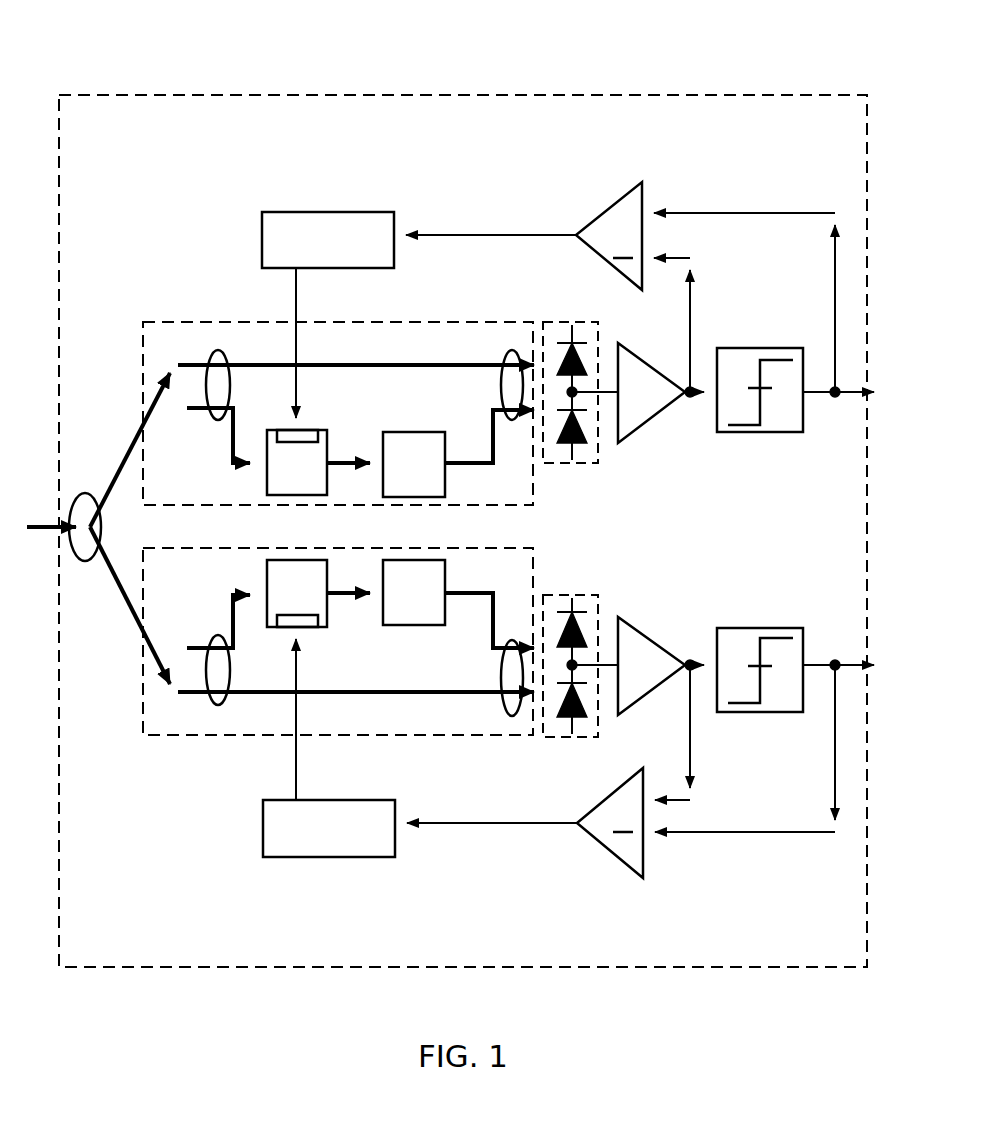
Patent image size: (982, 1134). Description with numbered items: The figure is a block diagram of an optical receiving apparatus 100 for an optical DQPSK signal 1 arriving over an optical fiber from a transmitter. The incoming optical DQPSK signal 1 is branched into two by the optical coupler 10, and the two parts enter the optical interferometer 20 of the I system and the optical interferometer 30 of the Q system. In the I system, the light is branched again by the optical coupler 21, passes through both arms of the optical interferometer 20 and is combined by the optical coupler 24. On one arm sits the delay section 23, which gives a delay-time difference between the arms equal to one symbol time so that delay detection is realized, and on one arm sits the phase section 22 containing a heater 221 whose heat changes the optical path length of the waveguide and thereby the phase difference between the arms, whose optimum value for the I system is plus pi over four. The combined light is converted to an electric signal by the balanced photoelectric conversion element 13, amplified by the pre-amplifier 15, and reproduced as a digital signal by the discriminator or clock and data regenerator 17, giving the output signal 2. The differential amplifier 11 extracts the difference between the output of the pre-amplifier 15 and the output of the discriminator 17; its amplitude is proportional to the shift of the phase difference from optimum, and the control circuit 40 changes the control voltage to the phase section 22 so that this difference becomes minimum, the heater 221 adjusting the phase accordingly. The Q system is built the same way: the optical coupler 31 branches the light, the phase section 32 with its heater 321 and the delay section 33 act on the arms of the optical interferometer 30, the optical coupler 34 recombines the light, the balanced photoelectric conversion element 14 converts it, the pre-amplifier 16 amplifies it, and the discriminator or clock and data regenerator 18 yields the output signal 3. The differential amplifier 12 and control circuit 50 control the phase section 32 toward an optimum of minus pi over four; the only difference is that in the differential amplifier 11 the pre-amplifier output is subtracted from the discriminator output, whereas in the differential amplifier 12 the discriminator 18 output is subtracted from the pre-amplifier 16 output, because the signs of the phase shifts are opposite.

The optical receiving apparatus 100 is at (666, 95).
The optical DQPSK signal 1 is at (34, 530).
The optical coupler (branching unit) 10 is at (72, 505).
The optical interferometer 20 is at (143, 382).
The optical coupler 21 is at (210, 356).
The phase section 22 is at (318, 428).
The heater 221 is at (290, 428).
The delay section 23 is at (416, 432).
The optical coupler 24 is at (512, 350).
The balanced photoelectric conversion element 13 is at (602, 454).
The pre-amplifier 15 is at (656, 408).
The discriminator or clock and data regenerator 17 is at (772, 432).
The output signal 2 is at (880, 386).
The differential amplifier 11 is at (624, 192).
The control circuit 40 is at (334, 212).
The optical interferometer 30 is at (143, 700).
The optical coupler 31 is at (212, 700).
The phase section 32 is at (318, 628).
The heater 321 is at (302, 628).
The delay section 33 is at (428, 626).
The optical coupler 34 is at (520, 716).
The balanced photoelectric conversion element 14 is at (604, 616).
The pre-amplifier 16 is at (660, 648).
The discriminator or clock and data regenerator 18 is at (762, 628).
The output signal 3 is at (858, 668).
The differential amplifier 12 is at (644, 876).
The control circuit 50 is at (316, 857).